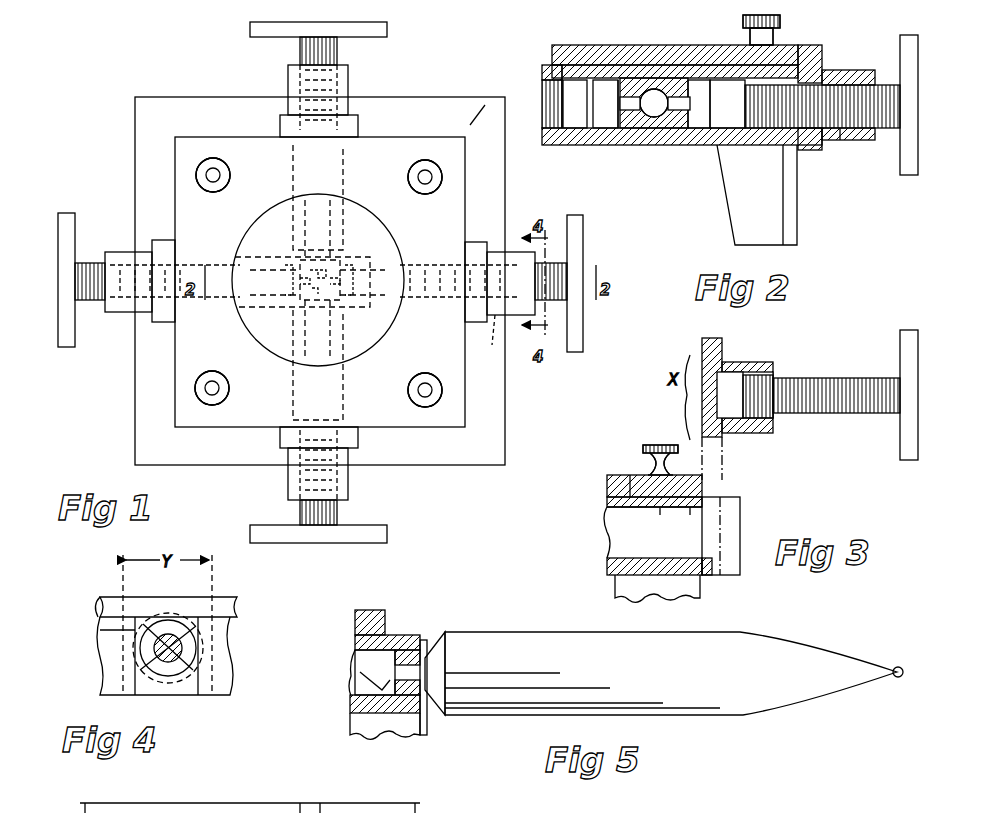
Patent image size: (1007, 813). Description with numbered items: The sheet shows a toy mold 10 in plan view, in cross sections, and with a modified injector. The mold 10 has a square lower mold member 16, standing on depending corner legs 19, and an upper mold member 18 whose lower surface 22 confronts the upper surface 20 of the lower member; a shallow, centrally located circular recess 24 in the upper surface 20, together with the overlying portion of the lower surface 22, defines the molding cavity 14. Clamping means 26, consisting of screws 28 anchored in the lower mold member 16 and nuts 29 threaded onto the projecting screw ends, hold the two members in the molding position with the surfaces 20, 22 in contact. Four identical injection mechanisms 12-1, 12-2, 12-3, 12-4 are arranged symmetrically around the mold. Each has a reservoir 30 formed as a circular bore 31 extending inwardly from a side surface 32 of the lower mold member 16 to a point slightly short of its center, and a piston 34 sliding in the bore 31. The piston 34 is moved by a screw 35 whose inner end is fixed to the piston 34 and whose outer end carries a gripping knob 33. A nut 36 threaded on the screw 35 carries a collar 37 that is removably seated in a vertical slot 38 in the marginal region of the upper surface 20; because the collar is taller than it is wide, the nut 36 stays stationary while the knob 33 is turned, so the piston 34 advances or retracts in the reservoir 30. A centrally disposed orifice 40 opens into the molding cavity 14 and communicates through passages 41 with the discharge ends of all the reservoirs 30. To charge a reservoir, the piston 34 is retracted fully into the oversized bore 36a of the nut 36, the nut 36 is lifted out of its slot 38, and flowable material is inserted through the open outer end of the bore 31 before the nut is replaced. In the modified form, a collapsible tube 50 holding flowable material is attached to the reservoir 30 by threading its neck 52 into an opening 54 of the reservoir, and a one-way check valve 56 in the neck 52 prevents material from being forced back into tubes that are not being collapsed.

In FIG. 1, the mold 10 is at (102, 428).
In FIG. 1, the injection mechanism 12-1 is at (516, 279).
In FIG. 2, the injection mechanism 12-1 is at (852, 58).
In FIG. 3, the injection mechanism 12-1 is at (755, 496).
In FIG. 4, the injection mechanism 12-1 is at (226, 640).
In FIG. 1, the injection mechanism 12-2 is at (358, 488).
In FIG. 1, the injection mechanism 12-3 is at (108, 322).
In FIG. 1, the injection mechanism 12-4 is at (278, 82).
In FIG. 1, the molding cavity 14 is at (345, 210).
In FIG. 2, the molding cavity 14 is at (604, 66).
In FIG. 3, the molding cavity 14 is at (612, 500).
In FIG. 1, the lower mold member 16 is at (472, 100).
In FIG. 2, the lower mold member 16 is at (540, 74).
In FIG. 3, the lower mold member 16 is at (602, 516).
In FIG. 4, the lower mold member 16 is at (92, 628).
In FIG. 5, the lower mold member 16 is at (400, 640).
In FIG. 1, the upper mold member 18 is at (380, 150).
In FIG. 2, the upper mold member 18 is at (578, 48).
In FIG. 3, the upper mold member 18 is at (602, 480).
In FIG. 4, the upper mold member 18 is at (92, 600).
In FIG. 5, the upper mold member 18 is at (378, 618).
In FIG. 2, the corner legs 19 is at (757, 195).
In FIG. 3, the corner legs 19 is at (614, 588).
In FIG. 5, the corner legs 19 is at (372, 722).
In FIG. 1, the upper surface 20 is at (500, 174).
In FIG. 2, the upper surface 20 is at (540, 61).
In FIG. 3, the upper surface 20 is at (681, 524).
In FIG. 4, the upper surface 20 is at (216, 602).
In FIG. 2, the lower surface 22 is at (568, 44).
In FIG. 3, the lower surface 22 is at (657, 524).
In FIG. 4, the lower surface 22 is at (100, 589).
In FIG. 2, the recess 24 is at (636, 66).
In FIG. 3, the recess 24 is at (628, 477).
In FIG. 1, the clamping means 26 is at (227, 195).
In FIG. 2, the clamping means 26 is at (782, 36).
In FIG. 3, the clamping means 26 is at (648, 438).
In FIG. 1, the screws 28 is at (216, 174).
In FIG. 2, the screws 28 is at (749, 18).
In FIG. 3, the screws 28 is at (664, 444).
In FIG. 1, the nuts 29 is at (228, 176).
In FIG. 2, the nuts 29 is at (748, 35).
In FIG. 3, the nuts 29 is at (646, 450).
In FIG. 1, the reservoir 30 is at (366, 300).
In FIG. 2, the reservoir 30 is at (606, 134).
In FIG. 3, the reservoir 30 is at (616, 551).
In FIG. 5, the reservoir 30 is at (360, 660).
In FIG. 1, the bore 31 is at (370, 256).
In FIG. 2, the bore 31 is at (660, 77).
In FIG. 3, the bore 31 is at (598, 541).
In FIG. 4, the bore 31 is at (166, 628).
In FIG. 5, the bore 31 is at (344, 652).
In FIG. 2, the side surface 32 is at (802, 150).
In FIG. 3, the side surface 32 is at (715, 578).
In FIG. 5, the side surface 32 is at (426, 712).
In FIG. 1, the gripping knob 33 is at (583, 326).
In FIG. 2, the gripping knob 33 is at (913, 175).
In FIG. 3, the gripping knob 33 is at (903, 346).
In FIG. 1, the piston 34 is at (396, 300).
In FIG. 2, the piston 34 is at (580, 144).
In FIG. 3, the piston 34 is at (738, 372).
In FIG. 4, the piston 34 is at (194, 674).
In FIG. 1, the screw 35 is at (575, 270).
In FIG. 2, the screw 35 is at (888, 86).
In FIG. 3, the screw 35 is at (830, 378).
In FIG. 1, the nut 36 is at (530, 256).
In FIG. 2, the nut 36 is at (866, 144).
In FIG. 3, the nut 36 is at (776, 362).
In FIG. 1, the oversized bore 36a is at (492, 334).
In FIG. 2, the oversized bore 36a is at (840, 142).
In FIG. 1, the collar 37 is at (476, 250).
In FIG. 2, the collar 37 is at (820, 62).
In FIG. 3, the collar 37 is at (722, 346).
In FIG. 3, the vertical slot 38 is at (721, 503).
In FIG. 4, the vertical slot 38 is at (122, 640).
In FIG. 1, the orifice 40 is at (326, 276).
In FIG. 2, the orifice 40 is at (654, 88).
In FIG. 1, the passages 41 is at (340, 297).
In FIG. 2, the passages 41 is at (632, 110).
In FIG. 5, the collapsible tube 50 is at (674, 673).
In FIG. 5, the neck 52 is at (432, 650).
In FIG. 5, the opening 54 is at (422, 690).
In FIG. 5, the check valve 56 is at (362, 680).